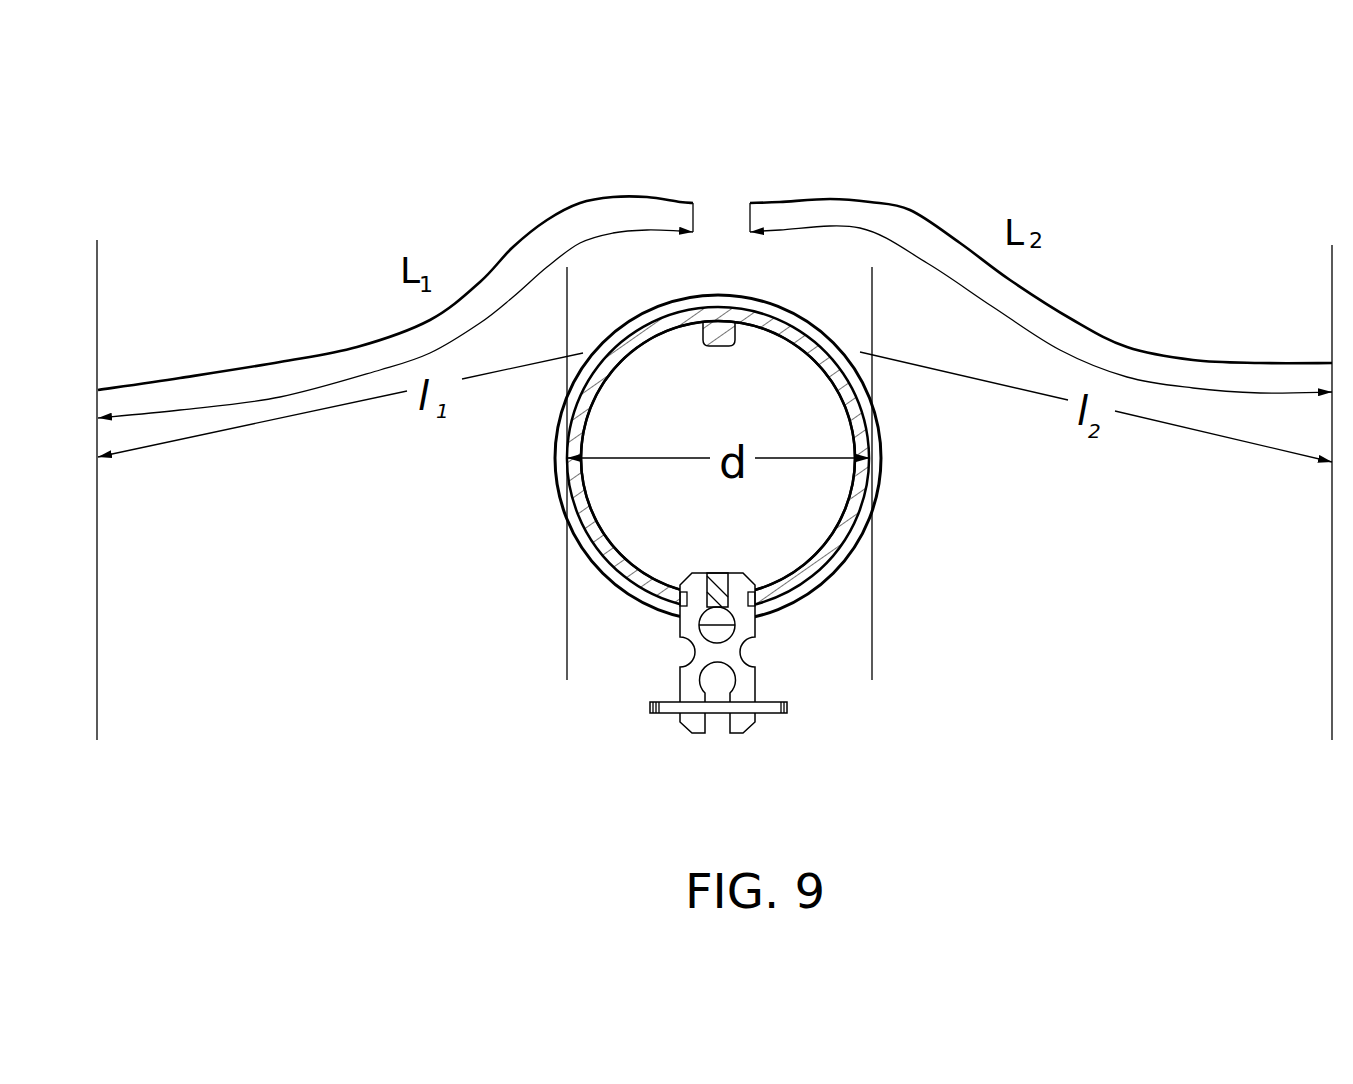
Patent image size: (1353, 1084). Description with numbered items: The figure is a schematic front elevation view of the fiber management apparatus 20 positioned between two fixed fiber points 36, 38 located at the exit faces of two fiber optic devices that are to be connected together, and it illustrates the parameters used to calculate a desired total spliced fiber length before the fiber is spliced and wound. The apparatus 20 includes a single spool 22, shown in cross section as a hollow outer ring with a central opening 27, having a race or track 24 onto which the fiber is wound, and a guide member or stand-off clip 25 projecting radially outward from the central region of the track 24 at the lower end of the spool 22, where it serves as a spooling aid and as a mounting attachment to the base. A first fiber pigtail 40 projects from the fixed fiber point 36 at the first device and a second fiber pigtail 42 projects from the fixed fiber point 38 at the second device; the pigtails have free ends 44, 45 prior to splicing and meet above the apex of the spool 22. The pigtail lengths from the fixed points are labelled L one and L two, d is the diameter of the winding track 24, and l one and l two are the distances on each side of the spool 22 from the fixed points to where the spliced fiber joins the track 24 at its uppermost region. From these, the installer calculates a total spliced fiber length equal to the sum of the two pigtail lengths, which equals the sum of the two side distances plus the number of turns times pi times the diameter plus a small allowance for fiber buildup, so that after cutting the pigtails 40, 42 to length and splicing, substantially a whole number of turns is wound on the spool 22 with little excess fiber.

The fiber management apparatus 20 is at (723, 516).
The spool 22 is at (880, 424).
The track 24 is at (600, 562).
The guide member 25 is at (705, 655).
The central opening 27 is at (668, 497).
The fixed fiber point 36 is at (99, 389).
The fixed fiber point 38 is at (1331, 362).
The first fiber pigtail 40 is at (357, 347).
The second fiber pigtail 42 is at (1073, 318).
The free end 44 is at (693, 203).
The free end 45 is at (750, 203).